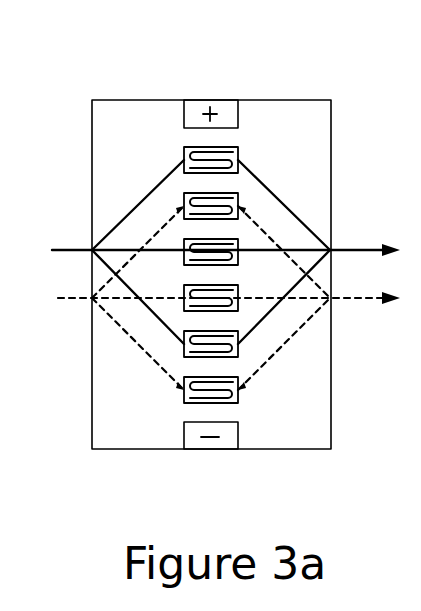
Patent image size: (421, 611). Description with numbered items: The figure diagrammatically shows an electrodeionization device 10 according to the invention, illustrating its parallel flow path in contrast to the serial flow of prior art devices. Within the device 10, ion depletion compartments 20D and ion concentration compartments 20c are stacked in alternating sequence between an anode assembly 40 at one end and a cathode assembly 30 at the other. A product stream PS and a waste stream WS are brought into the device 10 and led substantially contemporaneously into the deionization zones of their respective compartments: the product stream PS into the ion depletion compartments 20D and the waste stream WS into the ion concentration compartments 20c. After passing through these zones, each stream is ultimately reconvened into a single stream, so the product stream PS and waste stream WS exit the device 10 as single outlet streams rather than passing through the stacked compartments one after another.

The electrodeionization device 10 is at (240, 80).
The ion depletion compartment 20D is at (220, 147).
The ion concentration compartment 20c is at (240, 390).
The cathode assembly 30 is at (204, 100).
The anode assembly 40 is at (207, 450).
The product stream PS is at (203, 252).
The waste stream WS is at (200, 298).